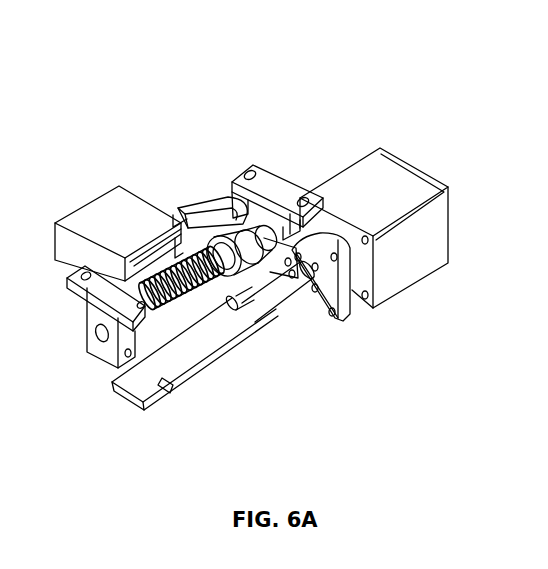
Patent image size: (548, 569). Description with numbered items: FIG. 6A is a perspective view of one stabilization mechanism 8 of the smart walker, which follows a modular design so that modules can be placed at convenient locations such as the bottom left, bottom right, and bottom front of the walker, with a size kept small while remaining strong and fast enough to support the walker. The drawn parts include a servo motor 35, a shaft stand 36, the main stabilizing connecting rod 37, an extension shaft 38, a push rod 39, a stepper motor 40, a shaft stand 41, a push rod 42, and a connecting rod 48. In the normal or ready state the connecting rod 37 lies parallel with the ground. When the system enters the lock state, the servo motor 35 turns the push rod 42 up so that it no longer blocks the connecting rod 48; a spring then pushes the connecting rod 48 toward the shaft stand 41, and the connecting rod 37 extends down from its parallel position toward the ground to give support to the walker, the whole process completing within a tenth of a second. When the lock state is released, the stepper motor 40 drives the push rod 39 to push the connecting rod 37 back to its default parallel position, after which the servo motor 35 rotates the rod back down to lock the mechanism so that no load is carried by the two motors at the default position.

The stabilization mechanism 8 is at (207, 122).
The servo motor 35 is at (93, 226).
The shaft stand 36 is at (92, 308).
The main stabilizing connecting rod 37 is at (190, 380).
The extension shaft 38 is at (258, 309).
The push rod 39 is at (348, 322).
The stepper motor 40 is at (448, 237).
The shaft stand 41 is at (268, 182).
The push rod 42 is at (183, 203).
The connecting rod 48 is at (232, 185).